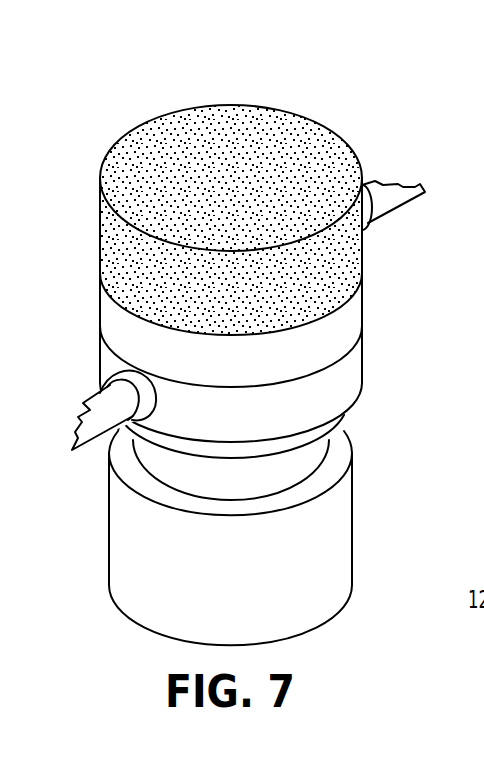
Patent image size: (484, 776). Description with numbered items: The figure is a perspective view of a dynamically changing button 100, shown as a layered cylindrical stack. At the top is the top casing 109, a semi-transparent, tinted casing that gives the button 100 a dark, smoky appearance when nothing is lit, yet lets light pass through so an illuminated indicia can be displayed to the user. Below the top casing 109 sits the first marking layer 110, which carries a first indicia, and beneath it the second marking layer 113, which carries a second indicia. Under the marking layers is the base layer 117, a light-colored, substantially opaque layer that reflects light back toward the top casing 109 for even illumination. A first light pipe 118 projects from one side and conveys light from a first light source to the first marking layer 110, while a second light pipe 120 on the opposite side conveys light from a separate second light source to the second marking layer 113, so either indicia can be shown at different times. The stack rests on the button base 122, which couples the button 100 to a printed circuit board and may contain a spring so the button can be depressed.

The dynamically changing button 100 is at (183, 86).
The top casing 109 is at (310, 117).
The first marking layer 110 is at (108, 310).
The second marking layer 113 is at (348, 362).
The base layer 117 is at (342, 430).
The first light pipe 118 is at (397, 209).
The second light pipe 120 is at (95, 397).
The button base 122 is at (108, 512).